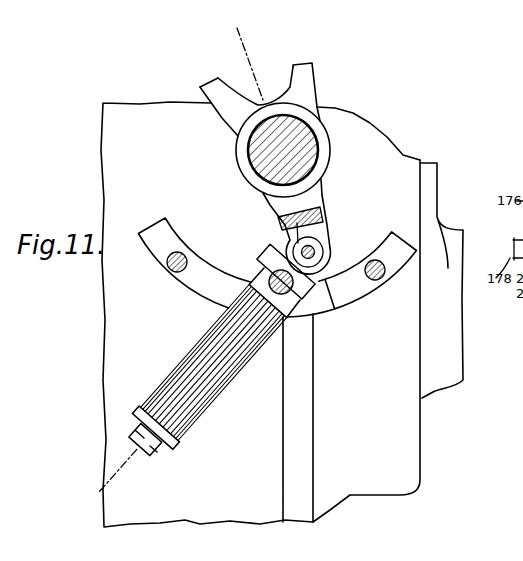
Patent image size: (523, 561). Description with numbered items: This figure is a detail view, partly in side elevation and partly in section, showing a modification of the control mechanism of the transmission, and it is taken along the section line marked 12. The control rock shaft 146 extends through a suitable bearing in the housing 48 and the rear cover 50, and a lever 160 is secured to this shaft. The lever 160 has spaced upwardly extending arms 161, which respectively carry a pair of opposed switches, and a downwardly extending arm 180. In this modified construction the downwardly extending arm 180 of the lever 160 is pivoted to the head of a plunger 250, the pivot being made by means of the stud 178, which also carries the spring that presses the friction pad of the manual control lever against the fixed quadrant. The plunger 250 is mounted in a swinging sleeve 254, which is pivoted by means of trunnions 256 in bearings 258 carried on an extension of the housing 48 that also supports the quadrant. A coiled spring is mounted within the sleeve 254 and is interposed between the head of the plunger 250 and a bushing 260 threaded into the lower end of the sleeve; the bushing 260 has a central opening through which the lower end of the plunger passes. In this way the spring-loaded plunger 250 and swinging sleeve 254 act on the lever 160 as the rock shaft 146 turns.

The section line 12- 12 is at (254, 42).
The housing 48 is at (217, 511).
The rear cover 50 is at (300, 512).
The control rock shaft 146 is at (314, 165).
The lever 160 is at (296, 84).
The arms 161 is at (208, 84).
The stud 178 is at (313, 247).
The downwardly extending arm 180 is at (302, 223).
The plunger 250 is at (305, 237).
The swinging sleeve 254 is at (193, 418).
The trunnions 256 is at (325, 285).
The bearings 258 is at (267, 256).
The bushing 260 is at (149, 455).